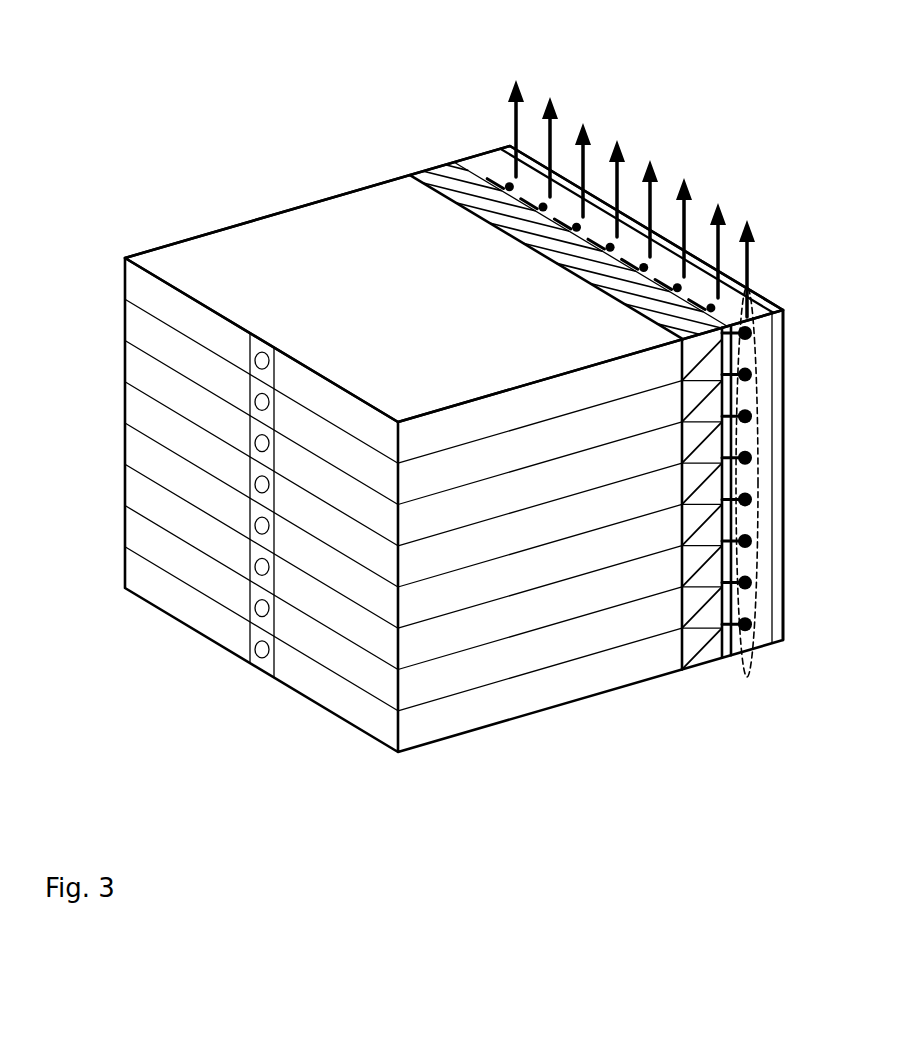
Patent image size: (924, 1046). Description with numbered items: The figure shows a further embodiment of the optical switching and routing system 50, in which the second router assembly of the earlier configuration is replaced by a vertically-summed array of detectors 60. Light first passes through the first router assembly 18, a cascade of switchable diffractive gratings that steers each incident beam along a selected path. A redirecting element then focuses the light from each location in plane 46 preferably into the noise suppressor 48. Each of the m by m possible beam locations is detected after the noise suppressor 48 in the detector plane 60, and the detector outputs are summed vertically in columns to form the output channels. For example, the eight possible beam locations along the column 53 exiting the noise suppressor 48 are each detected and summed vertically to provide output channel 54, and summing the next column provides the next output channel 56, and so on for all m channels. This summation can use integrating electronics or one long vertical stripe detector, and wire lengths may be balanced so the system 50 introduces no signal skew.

The first router assembly 18 is at (582, 745).
The optical switching and routing system 50 is at (260, 95).
The plane 46 is at (411, 176).
The noise suppressor 48 is at (455, 162).
The output channel 56 is at (718, 249).
The output channel 54 is at (747, 272).
The column 53 is at (758, 566).
The array of detectors 60 is at (778, 450).